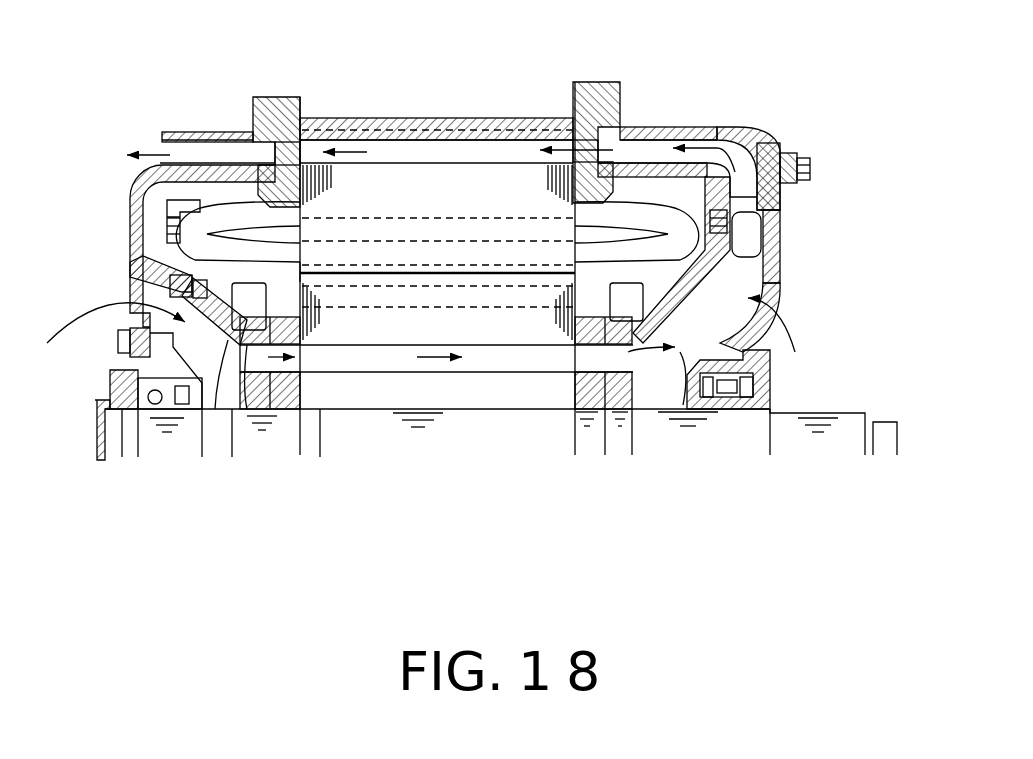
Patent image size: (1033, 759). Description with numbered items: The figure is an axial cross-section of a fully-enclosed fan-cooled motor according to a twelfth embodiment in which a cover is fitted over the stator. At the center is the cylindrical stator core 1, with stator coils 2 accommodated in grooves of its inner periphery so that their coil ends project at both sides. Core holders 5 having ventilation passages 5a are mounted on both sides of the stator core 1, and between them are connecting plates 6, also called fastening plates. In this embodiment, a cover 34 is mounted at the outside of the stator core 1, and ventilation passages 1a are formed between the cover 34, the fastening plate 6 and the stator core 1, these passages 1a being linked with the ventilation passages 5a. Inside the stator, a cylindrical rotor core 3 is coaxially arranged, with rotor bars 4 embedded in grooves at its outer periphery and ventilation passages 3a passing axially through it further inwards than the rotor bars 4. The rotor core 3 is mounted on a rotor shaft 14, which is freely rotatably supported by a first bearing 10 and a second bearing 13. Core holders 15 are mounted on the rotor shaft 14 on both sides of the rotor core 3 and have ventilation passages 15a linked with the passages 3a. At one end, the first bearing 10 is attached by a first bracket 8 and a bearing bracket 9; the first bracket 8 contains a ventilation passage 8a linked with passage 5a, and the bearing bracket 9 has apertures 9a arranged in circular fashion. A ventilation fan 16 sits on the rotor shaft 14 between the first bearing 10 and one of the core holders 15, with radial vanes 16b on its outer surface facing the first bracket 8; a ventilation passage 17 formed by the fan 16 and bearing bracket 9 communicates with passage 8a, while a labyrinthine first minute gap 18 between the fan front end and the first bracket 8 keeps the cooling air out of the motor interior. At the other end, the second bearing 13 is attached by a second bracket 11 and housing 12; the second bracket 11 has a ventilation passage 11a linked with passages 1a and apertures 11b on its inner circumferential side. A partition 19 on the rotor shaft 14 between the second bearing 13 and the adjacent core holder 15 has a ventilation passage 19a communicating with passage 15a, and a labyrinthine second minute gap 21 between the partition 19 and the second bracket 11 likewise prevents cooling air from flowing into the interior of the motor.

The stator core 1 is at (430, 173).
The ventilation passage 1a is at (384, 147).
The stator coil 2 is at (763, 147).
The rotor core 3 is at (507, 328).
The ventilation passage 3a is at (475, 357).
The rotor bar 4 is at (398, 298).
The core holder 5 is at (290, 97).
The ventilation passage 5a is at (291, 142).
The connecting plate 6 is at (508, 118).
The first bracket 8 is at (703, 127).
The ventilation passage 8a is at (643, 147).
The bearing bracket 9 is at (781, 262).
The aperture 9a is at (782, 305).
The first bearing 10 is at (723, 409).
The second bracket 11 is at (130, 190).
The ventilation passage 11a is at (207, 148).
The aperture 11b is at (130, 300).
The housing 12 is at (128, 363).
The second bearing 13 is at (145, 417).
The rotor shaft 14 is at (380, 437).
The core holder 15 is at (277, 417).
The ventilation passage 15a is at (315, 412).
The ventilation fan 16 is at (757, 362).
The radial vane 16b is at (782, 237).
The ventilation passage 17 is at (683, 405).
The first minute gap 18 is at (812, 165).
The partition 19 is at (215, 417).
The ventilation passage 19a is at (247, 410).
The second minute gap 21 is at (130, 262).
The cover 34 is at (477, 113).